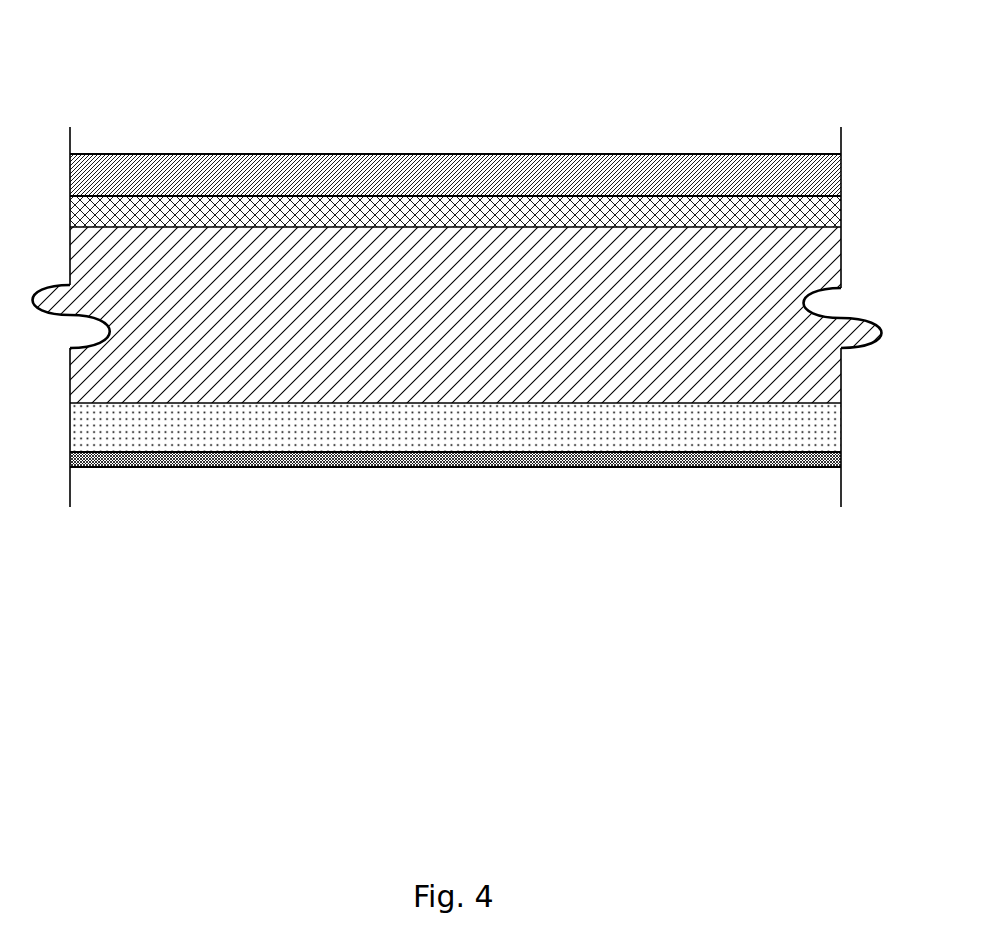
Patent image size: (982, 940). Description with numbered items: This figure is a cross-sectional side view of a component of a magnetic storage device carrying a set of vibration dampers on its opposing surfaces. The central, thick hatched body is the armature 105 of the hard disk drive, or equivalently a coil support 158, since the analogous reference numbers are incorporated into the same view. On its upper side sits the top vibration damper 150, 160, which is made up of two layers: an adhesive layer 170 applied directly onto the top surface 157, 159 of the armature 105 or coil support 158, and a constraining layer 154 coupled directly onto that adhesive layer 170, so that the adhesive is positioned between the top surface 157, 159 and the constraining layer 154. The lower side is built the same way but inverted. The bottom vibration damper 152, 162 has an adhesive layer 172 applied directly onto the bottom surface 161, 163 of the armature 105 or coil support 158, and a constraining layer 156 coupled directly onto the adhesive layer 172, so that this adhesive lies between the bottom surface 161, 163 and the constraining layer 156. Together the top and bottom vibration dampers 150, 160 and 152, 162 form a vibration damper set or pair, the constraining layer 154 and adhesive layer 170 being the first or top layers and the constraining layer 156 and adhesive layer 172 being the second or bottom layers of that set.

The top vibration damper 150 is at (457, 315).
The top vibration damper 160 is at (457, 315).
The constraining layer 154 is at (255, 173).
The adhesive layer 170 is at (517, 210).
The top surface 157 is at (455, 149).
The top surface 159 is at (367, 225).
The armature 105 is at (457, 398).
The coil support 158 is at (762, 362).
The bottom surface 161 is at (455, 486).
The bottom surface 163 is at (548, 403).
The adhesive layer 172 is at (375, 423).
The constraining layer 156 is at (618, 465).
The bottom vibration damper 152 is at (455, 529).
The bottom vibration damper 162 is at (257, 467).